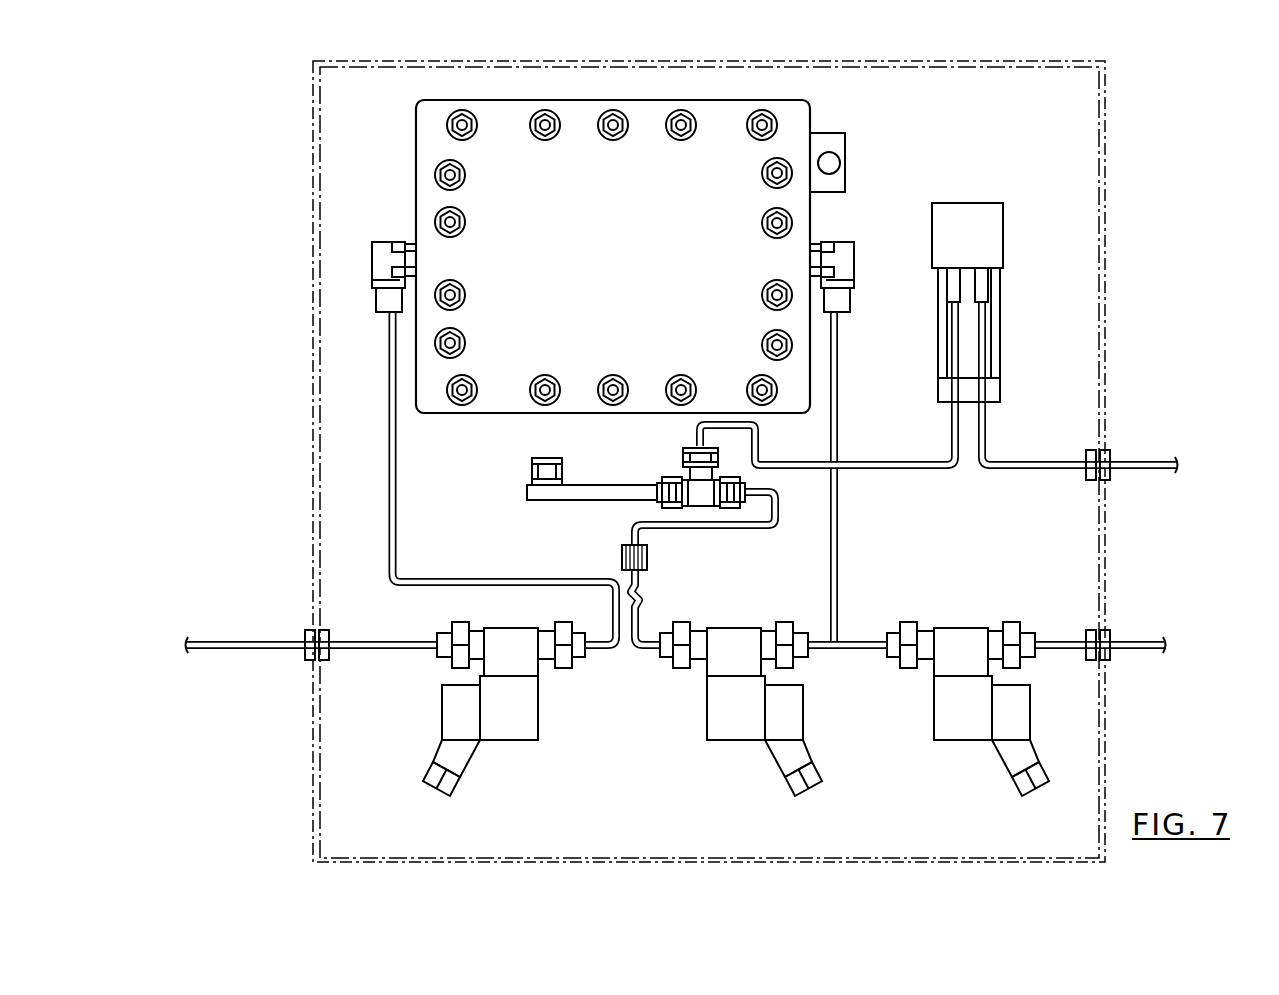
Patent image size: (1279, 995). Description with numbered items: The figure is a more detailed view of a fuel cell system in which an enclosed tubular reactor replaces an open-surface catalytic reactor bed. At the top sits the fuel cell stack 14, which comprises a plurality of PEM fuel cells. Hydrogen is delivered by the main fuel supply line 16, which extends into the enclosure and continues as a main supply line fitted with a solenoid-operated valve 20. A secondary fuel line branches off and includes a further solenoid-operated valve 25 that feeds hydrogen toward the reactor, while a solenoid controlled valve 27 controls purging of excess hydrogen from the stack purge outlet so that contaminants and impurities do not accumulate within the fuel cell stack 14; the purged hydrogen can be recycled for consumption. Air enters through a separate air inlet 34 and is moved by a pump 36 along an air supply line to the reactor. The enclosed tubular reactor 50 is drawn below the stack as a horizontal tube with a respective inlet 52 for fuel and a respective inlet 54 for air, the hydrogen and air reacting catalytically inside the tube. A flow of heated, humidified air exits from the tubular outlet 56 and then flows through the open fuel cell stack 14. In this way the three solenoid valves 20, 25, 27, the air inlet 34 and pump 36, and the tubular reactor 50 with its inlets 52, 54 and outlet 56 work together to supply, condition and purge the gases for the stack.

The fuel cell stack 14 is at (416, 172).
The main fuel supply line 16 is at (1140, 652).
The solenoid-operated valve 20 is at (955, 633).
The solenoid-operated valve 25 is at (796, 727).
The solenoid controlled valve 27 is at (445, 714).
The air inlet 34 is at (1163, 458).
The pump 36 is at (990, 238).
The enclosed tubular reactor 50 is at (565, 506).
The inlet 52 is at (775, 530).
The inlet 54 is at (770, 463).
The tubular outlet 56 is at (530, 470).